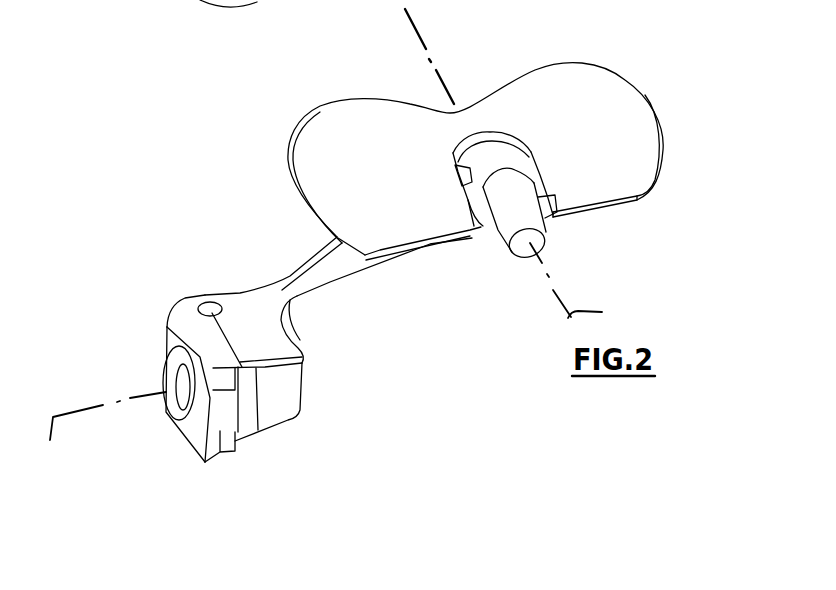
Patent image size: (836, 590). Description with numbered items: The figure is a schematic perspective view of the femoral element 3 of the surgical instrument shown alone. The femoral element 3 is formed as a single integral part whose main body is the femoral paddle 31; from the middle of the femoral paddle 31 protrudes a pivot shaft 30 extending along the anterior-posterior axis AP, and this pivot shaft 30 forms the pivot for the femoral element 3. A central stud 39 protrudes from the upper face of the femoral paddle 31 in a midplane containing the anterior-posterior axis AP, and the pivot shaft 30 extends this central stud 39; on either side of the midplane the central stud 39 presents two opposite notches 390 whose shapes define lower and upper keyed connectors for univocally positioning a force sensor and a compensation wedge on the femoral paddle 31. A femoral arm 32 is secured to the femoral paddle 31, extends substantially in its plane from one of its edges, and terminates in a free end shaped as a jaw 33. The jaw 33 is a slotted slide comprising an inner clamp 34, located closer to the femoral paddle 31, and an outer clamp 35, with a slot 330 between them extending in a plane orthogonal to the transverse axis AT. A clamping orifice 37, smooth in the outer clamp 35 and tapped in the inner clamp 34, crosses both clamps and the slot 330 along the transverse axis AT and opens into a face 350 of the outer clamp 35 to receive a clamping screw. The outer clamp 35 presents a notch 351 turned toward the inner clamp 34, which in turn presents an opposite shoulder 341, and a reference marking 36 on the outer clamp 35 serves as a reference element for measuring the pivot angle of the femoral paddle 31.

The femoral element 3 is at (213, 170).
The pivot shaft 30 is at (510, 227).
The femoral paddle 31 is at (618, 97).
The femoral arm 32 is at (333, 284).
The jaw 33 is at (163, 302).
The inner clamp 34 is at (291, 348).
The outer clamp 35 is at (188, 337).
The reference marking 36 is at (221, 433).
The clamping orifice 37 is at (185, 387).
The central stud 39 is at (493, 150).
The slot 330 is at (238, 366).
The shoulder 341 is at (223, 378).
The face 350 is at (195, 433).
The notch 351 is at (258, 368).
The notches 390 is at (462, 172).
The transverse axis AT is at (92, 438).
The anterior-posterior axis AP is at (588, 286).